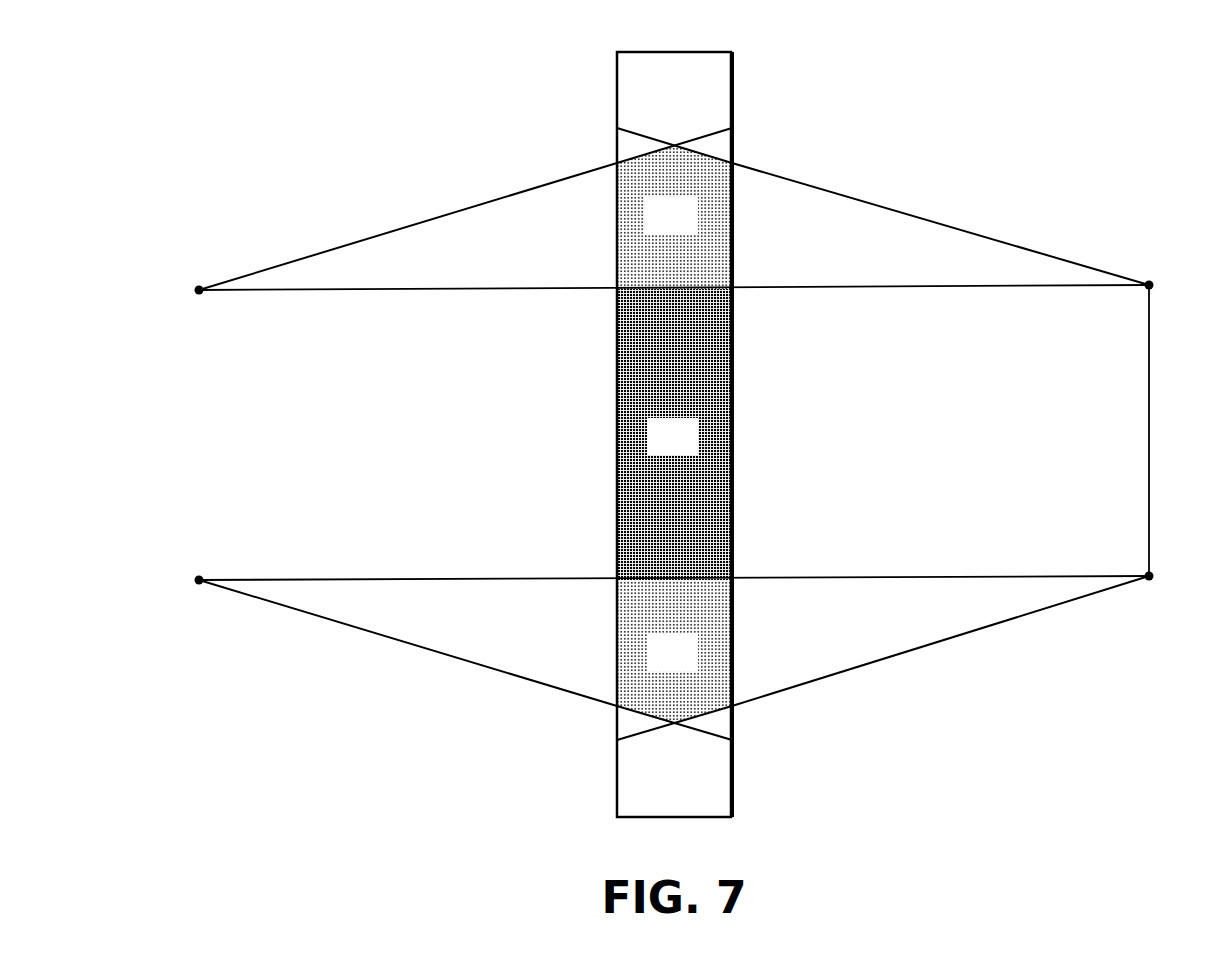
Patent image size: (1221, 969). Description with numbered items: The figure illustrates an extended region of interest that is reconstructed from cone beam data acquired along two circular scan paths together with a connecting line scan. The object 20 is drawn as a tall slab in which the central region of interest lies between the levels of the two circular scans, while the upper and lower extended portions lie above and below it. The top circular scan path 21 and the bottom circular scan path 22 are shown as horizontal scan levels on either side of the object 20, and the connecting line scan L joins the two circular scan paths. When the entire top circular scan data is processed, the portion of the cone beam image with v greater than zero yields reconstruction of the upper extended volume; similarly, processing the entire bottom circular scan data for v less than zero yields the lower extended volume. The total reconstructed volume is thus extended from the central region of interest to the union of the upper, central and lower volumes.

The object slab / scanned object 20 is at (707, 52).
The top circular scan path 21 is at (438, 291).
The bottom circular scan path 22 is at (449, 580).
The connecting line scan L is at (1151, 366).